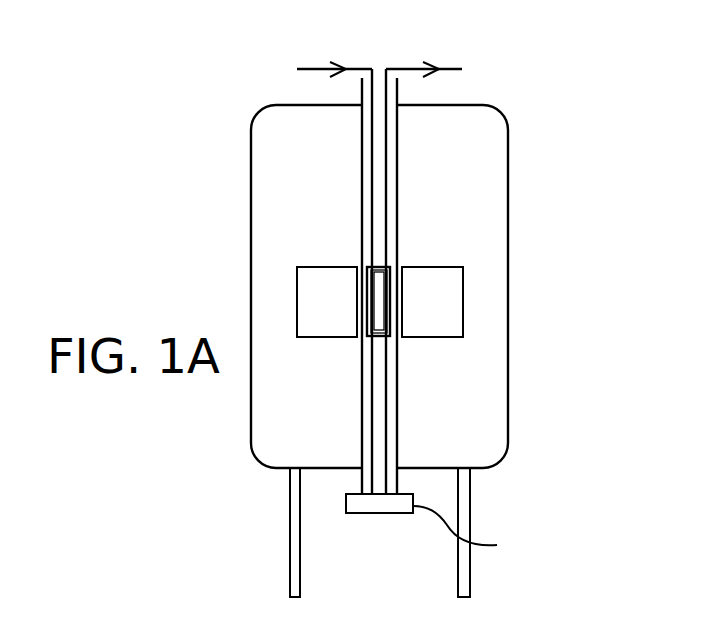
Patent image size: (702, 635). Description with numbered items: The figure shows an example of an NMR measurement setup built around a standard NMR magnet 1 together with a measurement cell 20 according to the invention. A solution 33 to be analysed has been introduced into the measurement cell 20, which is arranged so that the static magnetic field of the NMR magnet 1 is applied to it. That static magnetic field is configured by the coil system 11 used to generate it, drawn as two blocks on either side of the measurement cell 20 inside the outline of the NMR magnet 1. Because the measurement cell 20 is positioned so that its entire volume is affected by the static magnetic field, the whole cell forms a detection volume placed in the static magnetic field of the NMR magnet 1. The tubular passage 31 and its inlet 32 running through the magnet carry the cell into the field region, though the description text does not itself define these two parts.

The NMR magnet 1 is at (230, 122).
The coil system 11 is at (327, 270).
The measurement cell 20 is at (375, 317).
The tube 31 is at (370, 422).
The gas inlet 32 is at (452, 69).
The solution 33 is at (362, 294).